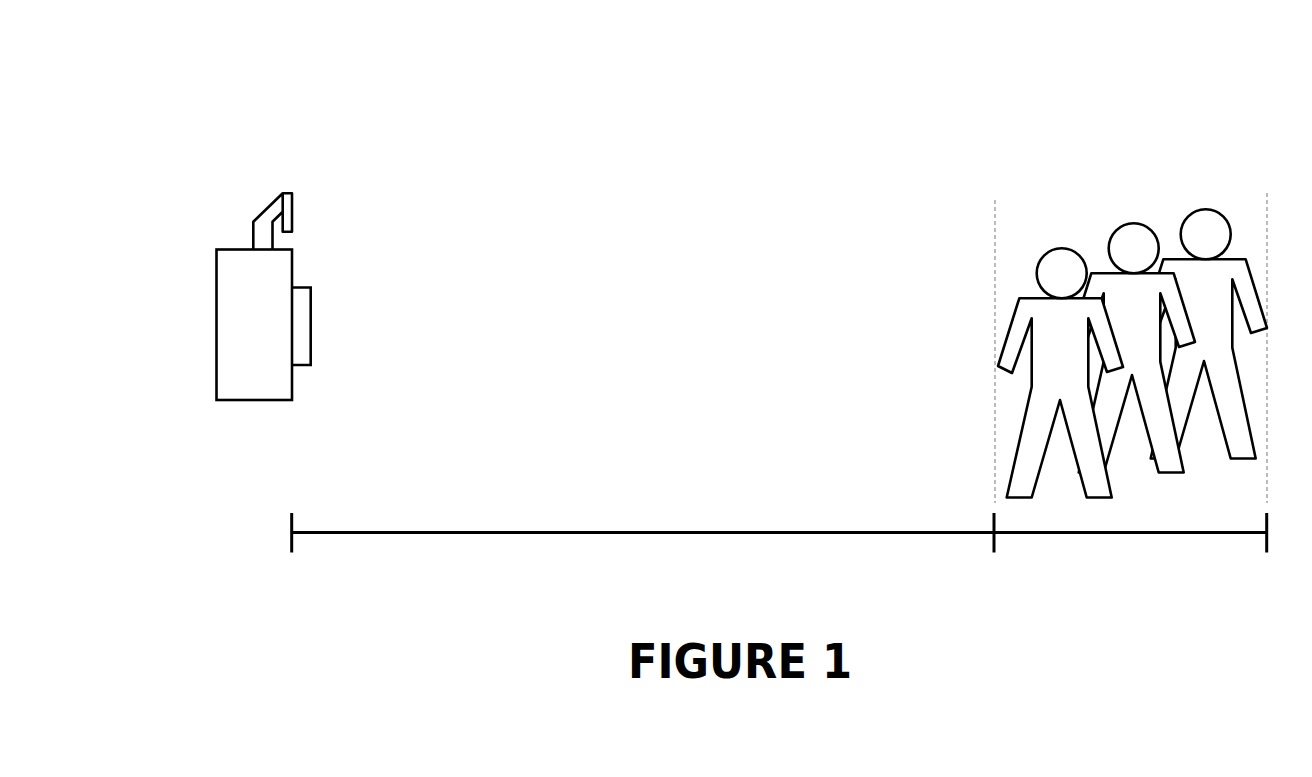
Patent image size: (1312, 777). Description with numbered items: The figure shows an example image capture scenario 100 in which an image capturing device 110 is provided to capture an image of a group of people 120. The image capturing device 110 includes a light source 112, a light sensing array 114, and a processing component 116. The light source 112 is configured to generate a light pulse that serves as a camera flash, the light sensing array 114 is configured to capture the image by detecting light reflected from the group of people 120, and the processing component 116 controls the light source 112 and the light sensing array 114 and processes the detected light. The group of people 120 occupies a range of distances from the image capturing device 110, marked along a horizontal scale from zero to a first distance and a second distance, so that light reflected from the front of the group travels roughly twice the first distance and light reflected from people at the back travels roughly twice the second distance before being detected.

The scenario 100 is at (621, 90).
The image capturing device 110 is at (292, 156).
The light source 112 is at (270, 203).
The light sensing array 114 is at (312, 311).
The processing component 116 is at (216, 331).
The group of people 120 is at (1146, 187).